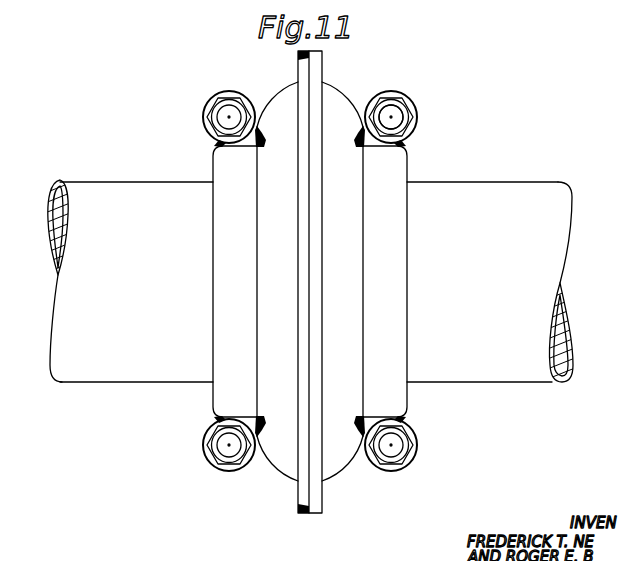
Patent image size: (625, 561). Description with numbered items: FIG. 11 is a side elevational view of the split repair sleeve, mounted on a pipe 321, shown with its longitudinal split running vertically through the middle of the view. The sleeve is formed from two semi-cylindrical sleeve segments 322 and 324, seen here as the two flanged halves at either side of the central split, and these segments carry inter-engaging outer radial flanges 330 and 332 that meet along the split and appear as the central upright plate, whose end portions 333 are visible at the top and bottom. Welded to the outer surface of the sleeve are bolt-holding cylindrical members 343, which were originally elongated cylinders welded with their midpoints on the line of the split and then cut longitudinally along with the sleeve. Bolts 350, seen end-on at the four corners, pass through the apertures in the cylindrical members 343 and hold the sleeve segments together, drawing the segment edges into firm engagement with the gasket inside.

The pipe 321 is at (492, 193).
The sleeve segment 322 is at (397, 265).
The sleeve segment 324 is at (218, 245).
The outer radial flange 330 is at (300, 73).
The outer radial flange 332 is at (317, 71).
The end caps 333 is at (298, 55).
The bolt-holding cylindrical member 343 is at (389, 95).
The bolt 350 is at (229, 117).